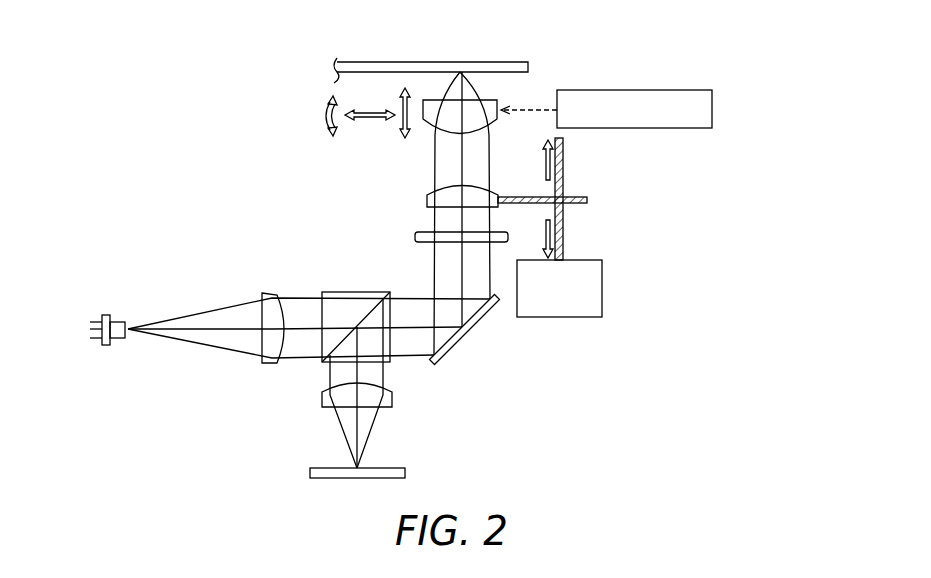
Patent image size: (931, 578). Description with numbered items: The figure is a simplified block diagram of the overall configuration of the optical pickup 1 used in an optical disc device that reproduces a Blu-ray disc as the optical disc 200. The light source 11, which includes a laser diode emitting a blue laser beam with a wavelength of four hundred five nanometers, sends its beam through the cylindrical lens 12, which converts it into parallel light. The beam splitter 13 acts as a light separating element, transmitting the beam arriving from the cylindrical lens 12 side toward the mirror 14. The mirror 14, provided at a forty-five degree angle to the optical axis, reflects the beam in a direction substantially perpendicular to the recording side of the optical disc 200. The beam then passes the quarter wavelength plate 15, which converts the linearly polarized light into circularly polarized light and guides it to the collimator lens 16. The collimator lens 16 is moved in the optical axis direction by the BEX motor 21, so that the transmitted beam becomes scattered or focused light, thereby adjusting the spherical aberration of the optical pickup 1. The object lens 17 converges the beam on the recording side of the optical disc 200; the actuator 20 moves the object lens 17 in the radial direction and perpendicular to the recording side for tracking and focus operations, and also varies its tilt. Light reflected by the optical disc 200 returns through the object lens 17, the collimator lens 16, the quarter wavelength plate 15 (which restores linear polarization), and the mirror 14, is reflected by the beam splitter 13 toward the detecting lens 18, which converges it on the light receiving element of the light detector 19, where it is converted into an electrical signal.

The optical pickup 1 is at (213, 119).
The light source 11 is at (106, 315).
The cylindrical lens 12 is at (268, 293).
The beam splitter 13 is at (358, 292).
The mirror 14 is at (470, 327).
The quarter wavelength plate 15 is at (415, 238).
The collimator lens 16 is at (427, 202).
The object lens 17 is at (430, 122).
The detecting lens 18 is at (322, 400).
The light detector 19 is at (310, 473).
The actuator 20 is at (689, 90).
The BEX motor 21 is at (583, 260).
The optical disc 200 is at (503, 62).